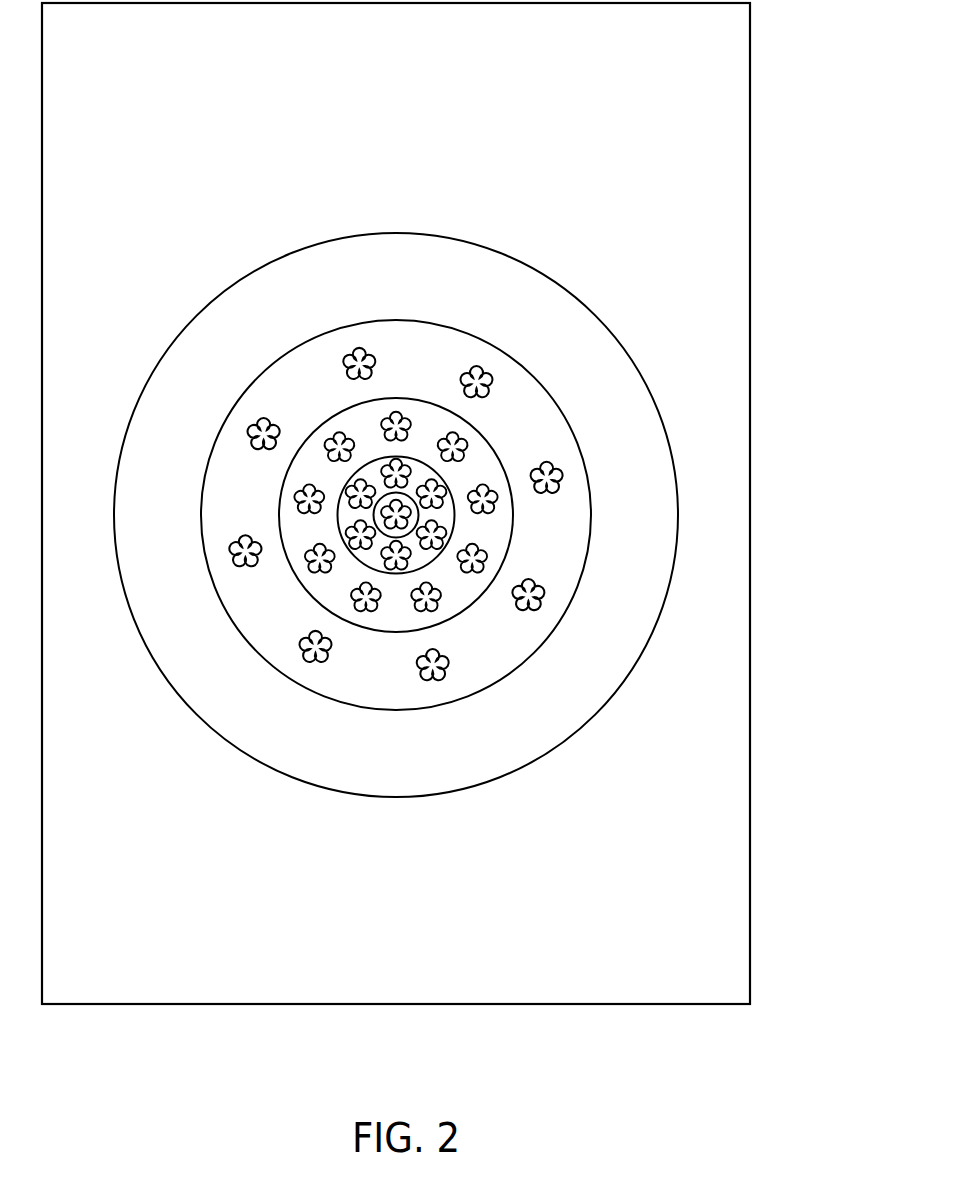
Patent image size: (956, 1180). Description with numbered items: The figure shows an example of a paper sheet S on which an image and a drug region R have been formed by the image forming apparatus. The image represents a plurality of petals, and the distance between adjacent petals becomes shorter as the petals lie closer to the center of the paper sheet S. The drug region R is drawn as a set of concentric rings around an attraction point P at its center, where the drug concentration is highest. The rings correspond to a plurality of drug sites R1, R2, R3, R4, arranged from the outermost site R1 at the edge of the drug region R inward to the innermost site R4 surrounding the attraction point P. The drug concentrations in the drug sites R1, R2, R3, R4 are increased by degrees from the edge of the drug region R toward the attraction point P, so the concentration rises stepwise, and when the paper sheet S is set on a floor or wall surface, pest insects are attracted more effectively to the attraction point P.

The paper sheet S is at (750, 85).
The attraction point P is at (408, 503).
The drug region R is at (810, 374).
The drug site R1 is at (635, 468).
The drug site R2 is at (563, 531).
The drug site R3 is at (497, 541).
The drug site R4 is at (423, 560).